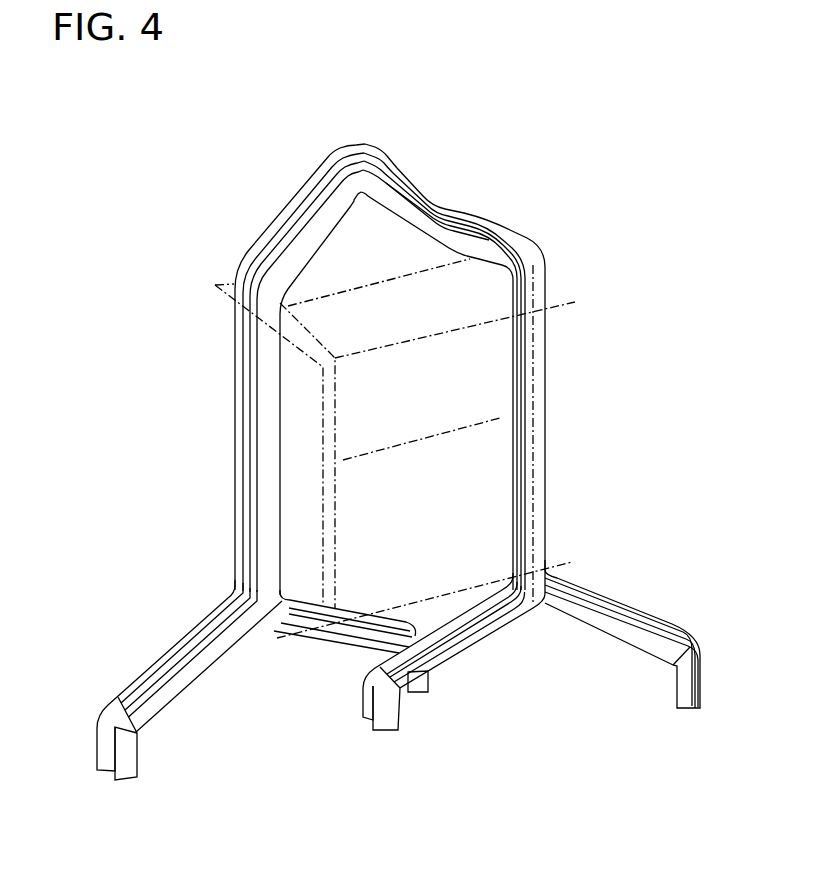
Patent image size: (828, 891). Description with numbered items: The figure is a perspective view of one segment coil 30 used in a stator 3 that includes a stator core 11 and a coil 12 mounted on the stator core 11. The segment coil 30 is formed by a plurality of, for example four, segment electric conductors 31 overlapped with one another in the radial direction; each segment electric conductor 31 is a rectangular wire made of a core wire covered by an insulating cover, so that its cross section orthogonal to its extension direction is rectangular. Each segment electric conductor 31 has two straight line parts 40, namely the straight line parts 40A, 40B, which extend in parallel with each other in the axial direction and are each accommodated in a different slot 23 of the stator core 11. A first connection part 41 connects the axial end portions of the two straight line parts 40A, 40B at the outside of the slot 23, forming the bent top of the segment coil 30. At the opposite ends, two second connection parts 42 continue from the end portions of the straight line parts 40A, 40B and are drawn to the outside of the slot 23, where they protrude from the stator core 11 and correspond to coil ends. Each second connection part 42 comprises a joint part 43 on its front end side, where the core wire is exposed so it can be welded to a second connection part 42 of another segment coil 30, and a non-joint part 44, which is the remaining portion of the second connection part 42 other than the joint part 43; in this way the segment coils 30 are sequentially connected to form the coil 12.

The stator 3 is at (550, 158).
The stator core 11 is at (205, 282).
The coil 12 is at (372, 369).
The slot 23 is at (533, 265).
The segment coil 30 is at (371, 481).
The segment electric conductor 31 is at (256, 464).
The straight line part 40 is at (372, 369).
The straight line part 40A is at (260, 552).
The straight line part 40B is at (525, 452).
The first connection part 41 is at (423, 217).
The second connection part 42 is at (369, 702).
The joint part 43 is at (148, 762).
The non-joint part 44 is at (193, 677).